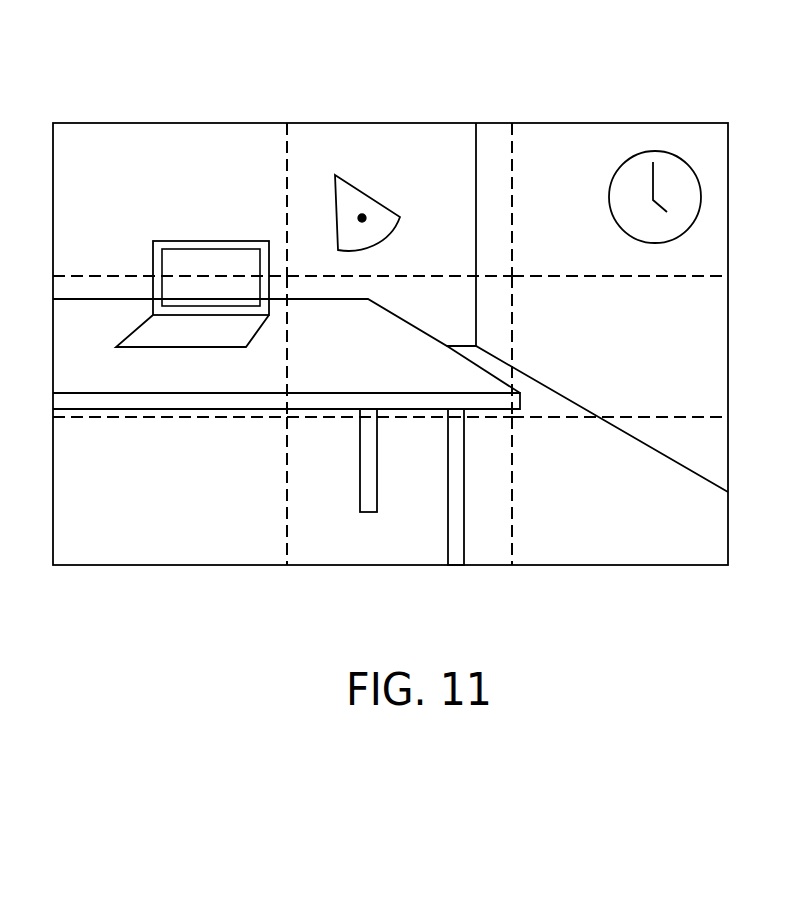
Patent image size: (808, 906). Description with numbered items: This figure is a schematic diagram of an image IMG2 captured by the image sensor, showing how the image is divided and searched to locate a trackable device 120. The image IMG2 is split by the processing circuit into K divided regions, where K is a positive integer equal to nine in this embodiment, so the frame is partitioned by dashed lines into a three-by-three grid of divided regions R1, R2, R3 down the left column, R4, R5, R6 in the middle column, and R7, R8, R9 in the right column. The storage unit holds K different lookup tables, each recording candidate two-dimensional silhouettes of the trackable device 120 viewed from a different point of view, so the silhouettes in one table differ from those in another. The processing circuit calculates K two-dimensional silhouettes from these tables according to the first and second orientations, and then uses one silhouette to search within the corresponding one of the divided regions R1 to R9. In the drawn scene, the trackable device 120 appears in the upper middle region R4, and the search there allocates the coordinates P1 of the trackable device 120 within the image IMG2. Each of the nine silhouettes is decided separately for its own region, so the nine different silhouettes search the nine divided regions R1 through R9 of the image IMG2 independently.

The image IMG2 is at (639, 122).
The trackable device 120 is at (362, 191).
The coordinates P1 is at (366, 217).
The divided region R1 is at (197, 208).
The divided region R2 is at (200, 382).
The divided region R3 is at (200, 504).
The divided region R4 is at (452, 212).
The divided region R5 is at (407, 356).
The divided region R6 is at (417, 496).
The divided region R7 is at (594, 221).
The divided region R8 is at (646, 354).
The divided region R9 is at (629, 507).